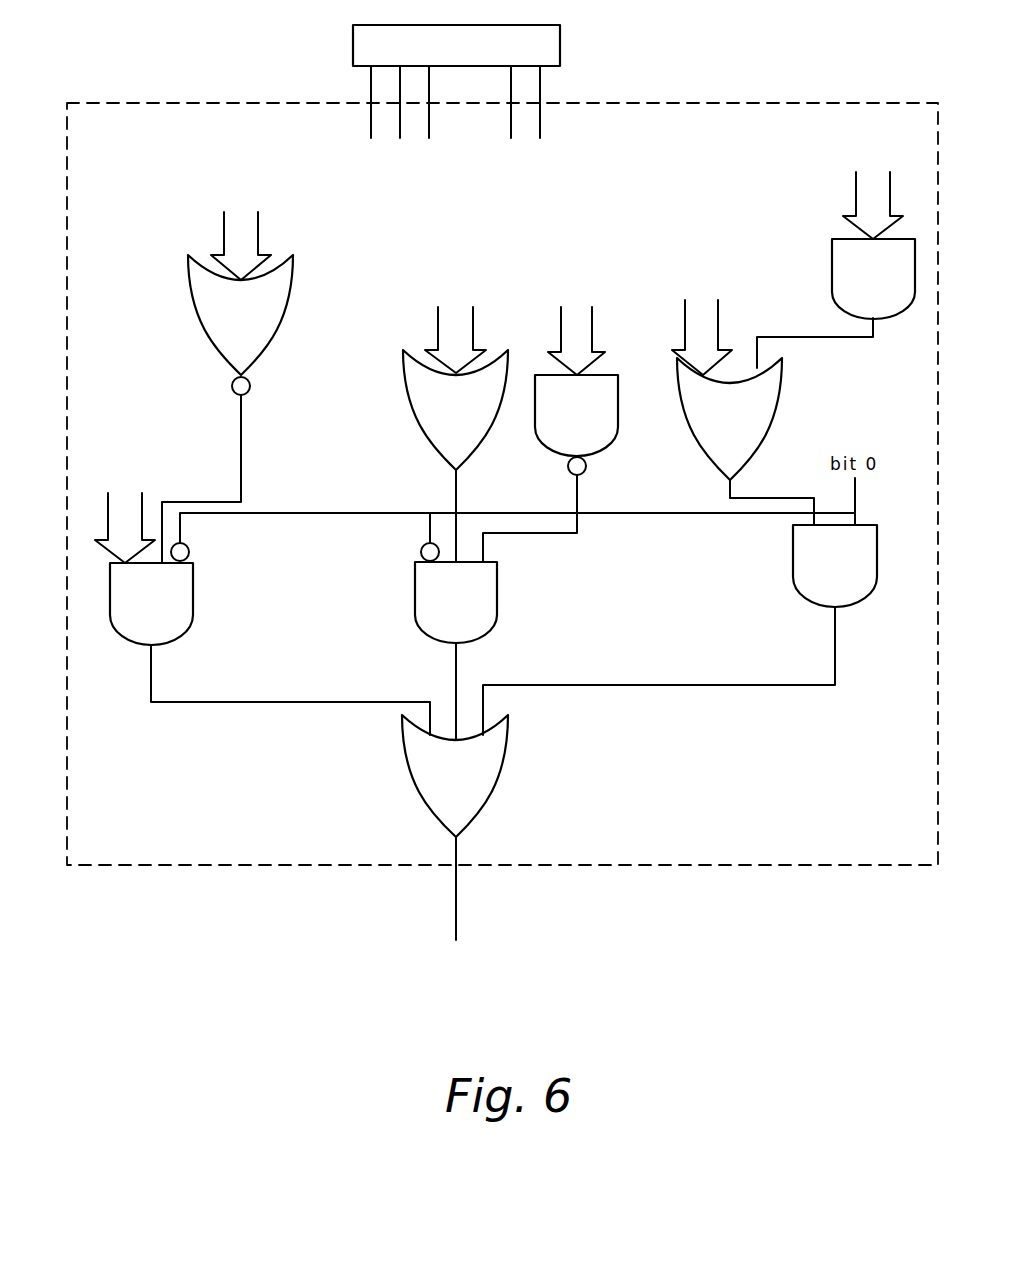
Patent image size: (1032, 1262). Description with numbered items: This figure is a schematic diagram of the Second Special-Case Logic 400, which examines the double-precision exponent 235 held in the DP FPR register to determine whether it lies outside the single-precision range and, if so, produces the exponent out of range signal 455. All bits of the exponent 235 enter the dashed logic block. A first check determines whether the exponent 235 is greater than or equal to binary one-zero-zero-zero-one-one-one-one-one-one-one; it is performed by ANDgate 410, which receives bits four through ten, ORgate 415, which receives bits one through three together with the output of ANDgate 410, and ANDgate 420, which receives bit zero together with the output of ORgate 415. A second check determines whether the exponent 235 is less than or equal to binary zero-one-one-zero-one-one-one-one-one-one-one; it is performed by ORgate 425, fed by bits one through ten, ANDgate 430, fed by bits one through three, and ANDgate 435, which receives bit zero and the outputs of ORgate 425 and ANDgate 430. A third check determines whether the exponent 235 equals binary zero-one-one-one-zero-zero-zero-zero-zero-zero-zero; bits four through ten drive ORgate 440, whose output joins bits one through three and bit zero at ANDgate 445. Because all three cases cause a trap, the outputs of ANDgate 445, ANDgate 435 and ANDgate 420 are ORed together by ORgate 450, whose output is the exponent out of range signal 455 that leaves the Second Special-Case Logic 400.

The exponent 235 is at (561, 52).
The Second Special-Case Logic 400 is at (857, 865).
The ANDgate 410 is at (832, 265).
The ORgate 415 is at (778, 412).
The ANDgate 420 is at (793, 575).
The ORgate 425 is at (432, 452).
The ANDgate 430 is at (618, 410).
The ANDgate 435 is at (497, 600).
The ORgate 440 is at (218, 355).
The ANDgate 445 is at (193, 600).
The ORgate 450 is at (505, 768).
The exponent out of range signal 455 is at (455, 912).